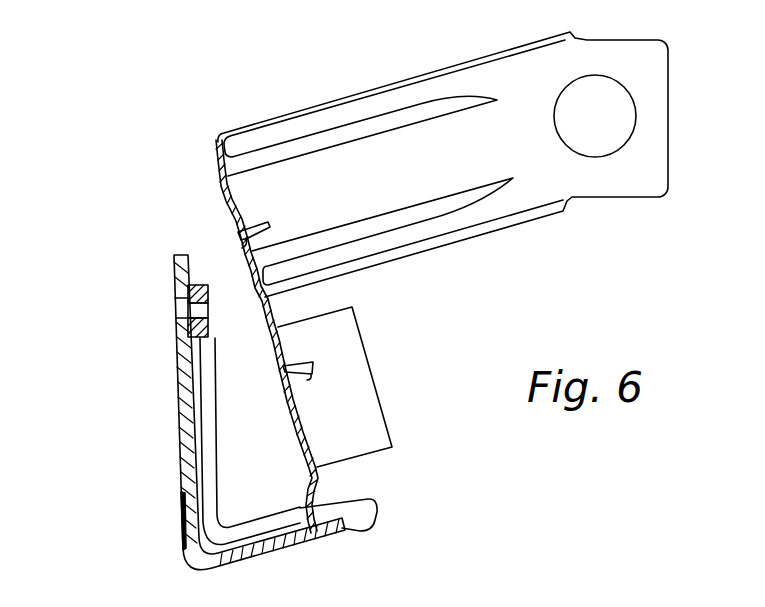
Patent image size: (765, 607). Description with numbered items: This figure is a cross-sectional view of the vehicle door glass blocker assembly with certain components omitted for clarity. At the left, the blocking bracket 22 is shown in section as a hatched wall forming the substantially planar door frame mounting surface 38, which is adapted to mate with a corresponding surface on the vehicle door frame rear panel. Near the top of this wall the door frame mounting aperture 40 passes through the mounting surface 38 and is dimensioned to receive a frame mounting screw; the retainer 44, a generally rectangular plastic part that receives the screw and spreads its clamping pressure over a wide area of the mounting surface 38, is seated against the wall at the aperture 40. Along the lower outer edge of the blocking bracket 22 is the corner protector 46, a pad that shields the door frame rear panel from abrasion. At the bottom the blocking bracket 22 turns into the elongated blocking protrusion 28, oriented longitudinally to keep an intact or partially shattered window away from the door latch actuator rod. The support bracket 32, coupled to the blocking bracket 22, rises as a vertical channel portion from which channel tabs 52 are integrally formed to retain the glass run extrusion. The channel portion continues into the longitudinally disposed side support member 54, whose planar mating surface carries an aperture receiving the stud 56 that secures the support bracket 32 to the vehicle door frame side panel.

The blocking bracket 22 is at (98, 430).
The blocking protrusion 28 is at (352, 532).
The support bracket 32 is at (363, 423).
The door frame mounting surface 38 is at (180, 440).
The door frame mounting aperture 40 is at (178, 315).
The retainer 44 is at (208, 287).
The corner protector 46 is at (180, 535).
The channel tab 52 is at (262, 222).
The side support member 54 is at (538, 36).
The stud 56 is at (618, 113).